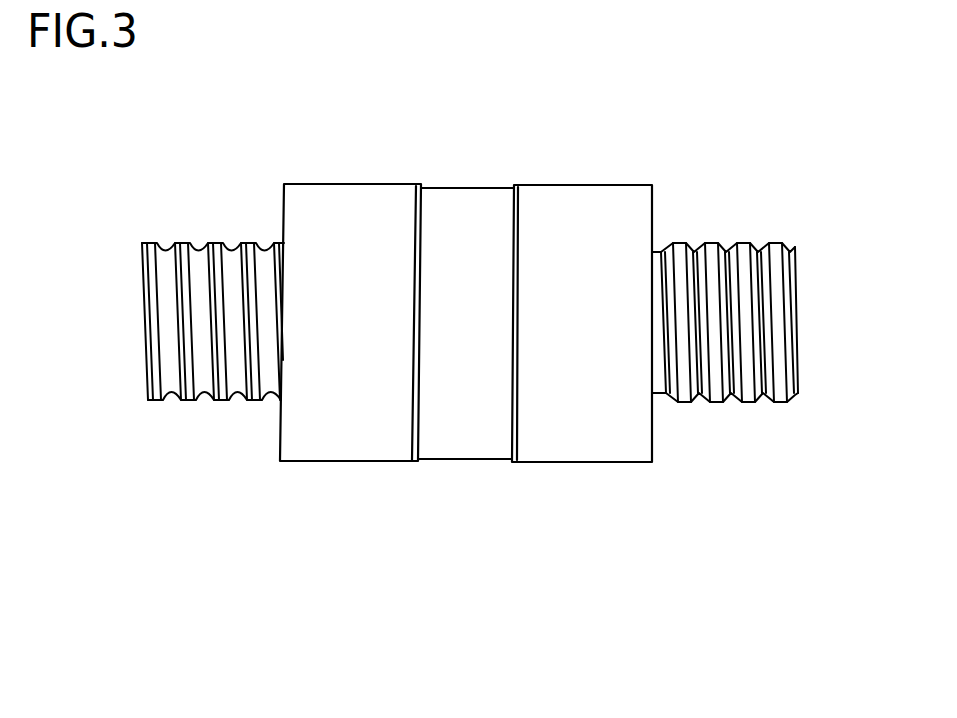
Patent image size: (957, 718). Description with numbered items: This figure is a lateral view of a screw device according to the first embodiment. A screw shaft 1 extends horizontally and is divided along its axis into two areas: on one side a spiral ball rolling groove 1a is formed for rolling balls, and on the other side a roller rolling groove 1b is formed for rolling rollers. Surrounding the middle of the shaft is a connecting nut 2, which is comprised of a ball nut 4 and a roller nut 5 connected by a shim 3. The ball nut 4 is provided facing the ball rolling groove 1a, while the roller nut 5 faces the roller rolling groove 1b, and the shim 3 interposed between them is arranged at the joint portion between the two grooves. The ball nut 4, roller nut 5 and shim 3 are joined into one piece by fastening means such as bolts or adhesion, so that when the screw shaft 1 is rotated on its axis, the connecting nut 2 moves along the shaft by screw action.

The screw shaft 1 is at (708, 245).
The ball rolling groove 1a is at (207, 380).
The roller rolling groove 1b is at (733, 400).
The connecting nut 2 is at (466, 303).
The shim 3 is at (468, 449).
The ball nut 4 is at (351, 449).
The roller nut 5 is at (600, 449).